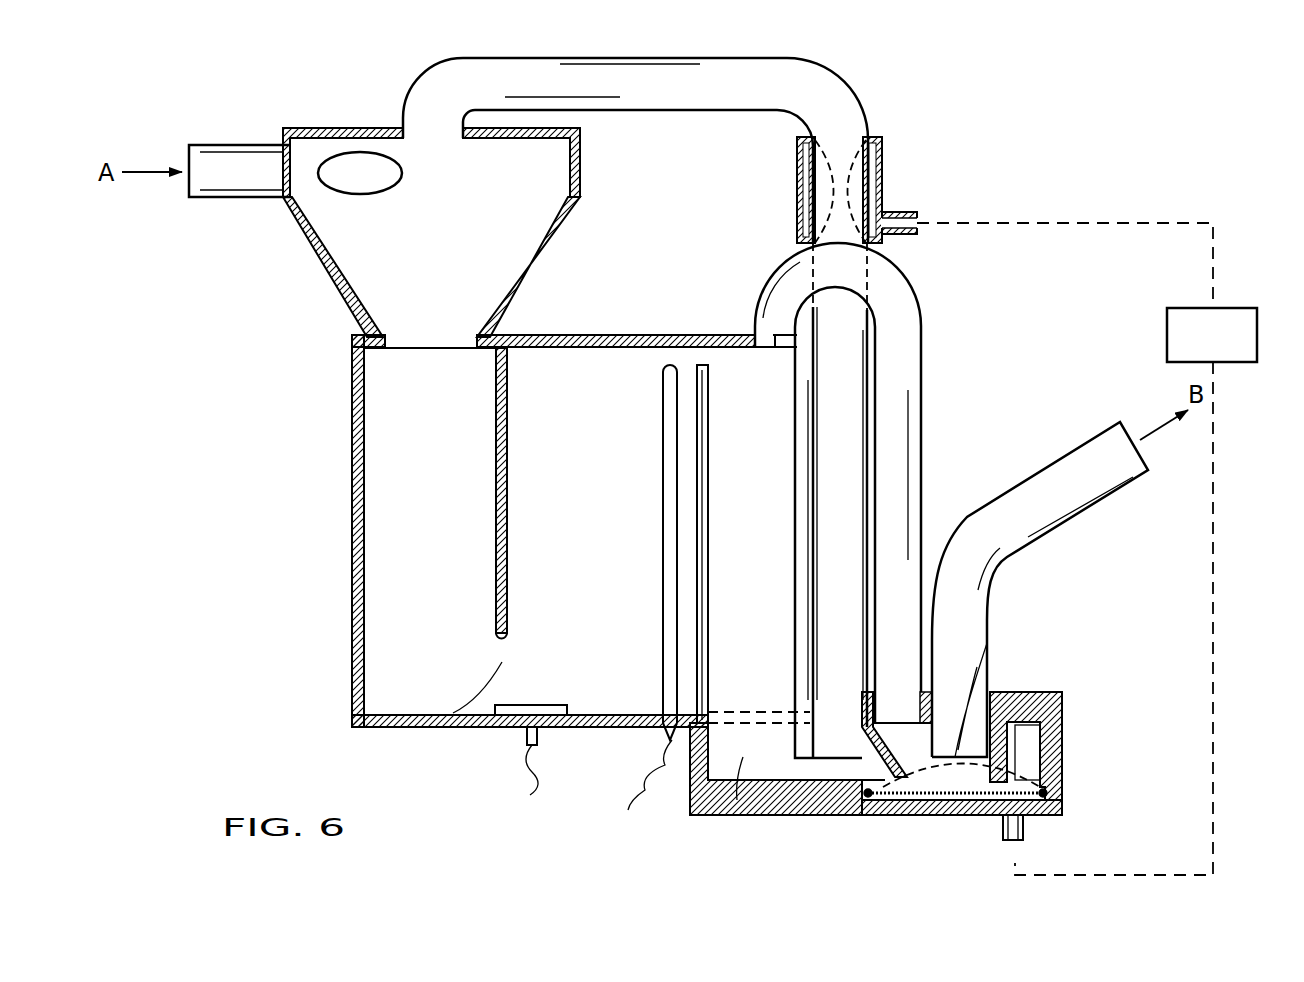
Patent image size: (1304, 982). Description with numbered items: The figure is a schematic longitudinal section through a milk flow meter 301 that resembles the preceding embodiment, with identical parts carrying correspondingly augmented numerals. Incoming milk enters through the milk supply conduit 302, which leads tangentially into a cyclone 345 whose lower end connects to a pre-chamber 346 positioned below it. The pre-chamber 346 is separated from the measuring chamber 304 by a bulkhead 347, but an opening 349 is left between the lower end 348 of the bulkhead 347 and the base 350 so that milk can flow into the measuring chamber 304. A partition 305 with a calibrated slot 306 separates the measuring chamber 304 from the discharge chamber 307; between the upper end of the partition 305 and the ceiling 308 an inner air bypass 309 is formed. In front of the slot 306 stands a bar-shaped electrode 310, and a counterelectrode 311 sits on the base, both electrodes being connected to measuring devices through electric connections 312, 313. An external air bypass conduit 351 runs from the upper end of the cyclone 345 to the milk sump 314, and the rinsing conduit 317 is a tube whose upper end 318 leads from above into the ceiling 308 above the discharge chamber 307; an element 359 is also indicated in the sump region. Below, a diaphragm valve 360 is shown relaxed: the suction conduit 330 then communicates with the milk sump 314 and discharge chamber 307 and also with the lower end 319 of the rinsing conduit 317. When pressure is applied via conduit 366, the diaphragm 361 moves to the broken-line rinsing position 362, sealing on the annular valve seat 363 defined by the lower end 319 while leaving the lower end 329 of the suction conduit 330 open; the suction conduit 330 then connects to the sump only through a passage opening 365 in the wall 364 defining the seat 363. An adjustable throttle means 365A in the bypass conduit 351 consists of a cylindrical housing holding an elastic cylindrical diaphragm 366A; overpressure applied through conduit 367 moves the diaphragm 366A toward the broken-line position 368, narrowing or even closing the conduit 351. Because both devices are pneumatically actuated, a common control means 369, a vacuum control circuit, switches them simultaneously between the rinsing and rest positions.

The milk flow meter 301 is at (345, 497).
The milk supply conduit 302 is at (236, 152).
The measuring chamber 304 is at (611, 525).
The partition 305 is at (712, 478).
The calibrated slot 306 is at (705, 526).
The discharge chamber 307 is at (776, 563).
The ceiling 308 is at (595, 330).
The inner air bypass 309 is at (707, 330).
The bar-shaped electrode 310 is at (672, 656).
The counterelectrode 311 is at (534, 705).
The sensor lead 312 is at (630, 788).
The sensor lead 313 is at (532, 791).
The milk sump 314 is at (703, 815).
The rinsing conduit 317 is at (900, 333).
The upper end of the rinsing conduit 318 is at (773, 347).
The lower end of the rinsing conduit 319 is at (1012, 745).
The lower end of the suction conduit 329 is at (983, 656).
The suction conduit 330 is at (1095, 487).
The cyclone 345 is at (340, 215).
The pre-chamber 346 is at (412, 555).
The bulkhead 347 is at (495, 606).
The lower end of the bulkhead 348 is at (497, 632).
The opening 349 is at (433, 727).
The base 350 is at (475, 727).
The external air bypass conduit 351 is at (835, 96).
The sump passage 359 is at (767, 815).
The diaphragm valve 360 is at (970, 822).
The diaphragm 361 is at (1060, 793).
The rinsing position of the diaphragm 362 is at (1062, 746).
The annular valve seat 363 is at (915, 810).
The wall 364 is at (835, 735).
The passage opening 365 is at (892, 805).
The adjustable throttle means 365A is at (898, 183).
The conduit 366 is at (1023, 832).
The cylindrical diaphragm 366A is at (882, 172).
The conduit 367 is at (910, 236).
The broken-line position of the cylindrical diaphragm 368 is at (798, 123).
The common control means 369 is at (1167, 340).